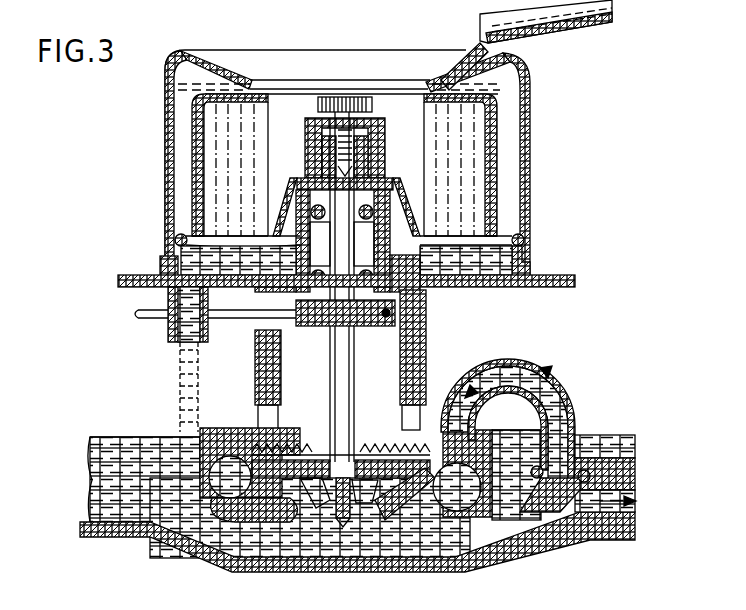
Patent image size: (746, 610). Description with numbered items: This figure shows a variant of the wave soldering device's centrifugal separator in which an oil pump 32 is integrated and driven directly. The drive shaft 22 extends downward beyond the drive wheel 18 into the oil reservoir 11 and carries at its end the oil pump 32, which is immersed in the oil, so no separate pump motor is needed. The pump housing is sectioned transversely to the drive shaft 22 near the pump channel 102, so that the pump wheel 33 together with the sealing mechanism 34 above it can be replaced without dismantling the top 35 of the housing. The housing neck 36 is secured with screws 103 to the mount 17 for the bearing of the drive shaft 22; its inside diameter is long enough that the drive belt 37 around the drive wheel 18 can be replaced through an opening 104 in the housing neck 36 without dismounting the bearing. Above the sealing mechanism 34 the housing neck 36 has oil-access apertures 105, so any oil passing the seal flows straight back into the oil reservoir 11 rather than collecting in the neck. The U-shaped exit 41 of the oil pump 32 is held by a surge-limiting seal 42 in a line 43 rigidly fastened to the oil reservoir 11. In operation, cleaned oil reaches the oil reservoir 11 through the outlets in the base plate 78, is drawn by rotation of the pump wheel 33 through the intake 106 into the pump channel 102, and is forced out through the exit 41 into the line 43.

The oil reservoir 11 is at (454, 563).
The mount 17 is at (176, 240).
The drive wheel 18 is at (412, 351).
The drive shaft 22 is at (350, 385).
The oil pump 32 is at (257, 437).
The pump wheel 33 is at (376, 498).
The sealing mechanism 34 is at (372, 450).
The top 35 is at (426, 323).
The housing neck 36 is at (396, 328).
The drive belt 37 is at (140, 314).
The U-shaped exit 41 is at (570, 385).
The surge-limiting seal 42 is at (580, 475).
The line 43 is at (562, 506).
The base plate 78 is at (562, 288).
The pump channel 102 is at (223, 502).
The screws 103 is at (519, 237).
The opening 104 is at (266, 328).
The oil-access apertures 105 is at (277, 420).
The intake 106 is at (303, 512).